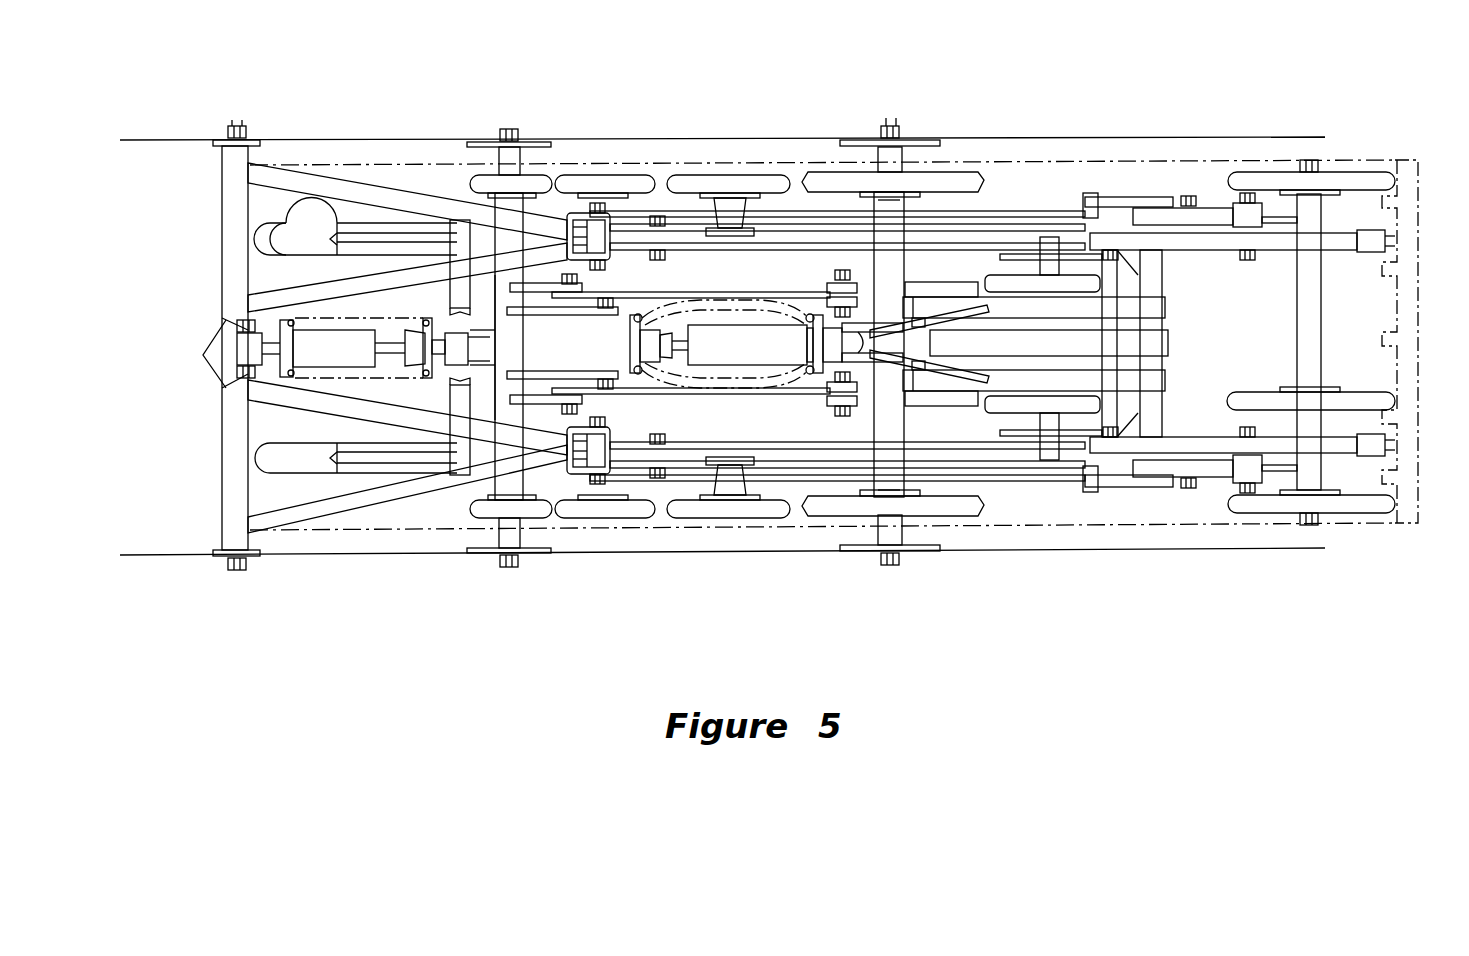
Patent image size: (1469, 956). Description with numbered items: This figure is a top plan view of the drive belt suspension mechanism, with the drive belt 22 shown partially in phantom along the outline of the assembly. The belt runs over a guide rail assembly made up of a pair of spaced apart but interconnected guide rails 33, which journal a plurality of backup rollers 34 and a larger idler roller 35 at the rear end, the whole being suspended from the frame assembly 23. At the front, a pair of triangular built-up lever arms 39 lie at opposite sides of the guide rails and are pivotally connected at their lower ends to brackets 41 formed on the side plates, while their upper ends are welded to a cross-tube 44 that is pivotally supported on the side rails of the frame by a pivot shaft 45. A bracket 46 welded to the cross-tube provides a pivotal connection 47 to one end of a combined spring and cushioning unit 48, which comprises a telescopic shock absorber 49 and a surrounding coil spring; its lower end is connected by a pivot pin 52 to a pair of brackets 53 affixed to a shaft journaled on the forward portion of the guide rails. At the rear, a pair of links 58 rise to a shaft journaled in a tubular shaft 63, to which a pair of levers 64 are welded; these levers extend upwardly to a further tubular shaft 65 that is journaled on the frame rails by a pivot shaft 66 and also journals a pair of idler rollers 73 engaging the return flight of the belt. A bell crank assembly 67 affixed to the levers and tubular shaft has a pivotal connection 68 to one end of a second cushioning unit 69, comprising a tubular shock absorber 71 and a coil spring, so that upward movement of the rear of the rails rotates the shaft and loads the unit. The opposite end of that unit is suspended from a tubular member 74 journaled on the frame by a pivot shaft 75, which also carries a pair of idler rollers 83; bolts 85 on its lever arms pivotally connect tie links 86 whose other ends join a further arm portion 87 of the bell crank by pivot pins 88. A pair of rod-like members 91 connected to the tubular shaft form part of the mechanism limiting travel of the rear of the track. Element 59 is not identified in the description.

The drive belt 22 is at (1422, 350).
The frame assembly 23 is at (1120, 175).
The guide rails 33 is at (798, 224).
The backup rollers 34 is at (625, 175).
The idler roller 35 is at (1363, 172).
The lever arms 39 is at (368, 190).
The brackets 41 is at (608, 428).
The cross-tube 44 is at (222, 512).
The pivot shaft 45 is at (238, 124).
The bracket 46 is at (222, 318).
The pivotal connection 47 is at (238, 388).
The combined spring and cushioning unit 48 is at (335, 390).
The telescopic shock absorber 49 is at (318, 340).
The pivot pin 52 is at (440, 322).
The brackets 53 is at (440, 400).
The links 58 is at (1125, 233).
The rear frame member 59 is at (1155, 390).
The tubular shaft 63 is at (1112, 300).
The levers 64 is at (940, 330).
The tubular shaft 65 is at (905, 560).
The pivot shaft 66 is at (896, 124).
The bell crank assembly 67 is at (888, 320).
The pivotal connection 68 is at (888, 375).
The cushioning unit 69 is at (740, 378).
The tubular shock absorber 71 is at (715, 335).
The idler rollers 73 is at (958, 172).
The tubular member 74 is at (510, 345).
The pivot shaft 75 is at (494, 128).
The idler rollers 83 is at (535, 175).
The bolts 85 is at (570, 320).
The tie links 86 is at (800, 297).
The arm portion 87 is at (858, 211).
The pivot pins 88 is at (838, 270).
The rod-like members 91 is at (1055, 208).